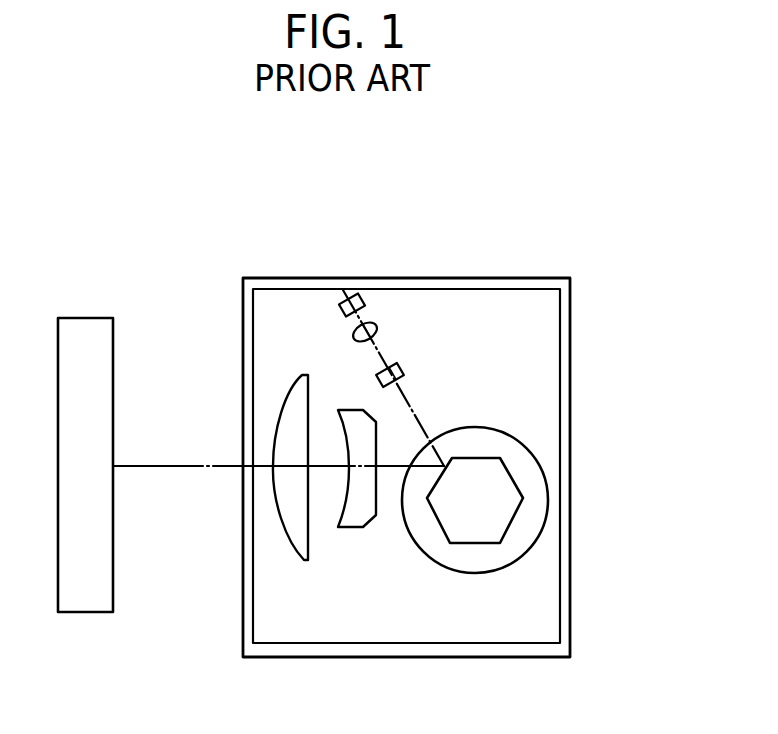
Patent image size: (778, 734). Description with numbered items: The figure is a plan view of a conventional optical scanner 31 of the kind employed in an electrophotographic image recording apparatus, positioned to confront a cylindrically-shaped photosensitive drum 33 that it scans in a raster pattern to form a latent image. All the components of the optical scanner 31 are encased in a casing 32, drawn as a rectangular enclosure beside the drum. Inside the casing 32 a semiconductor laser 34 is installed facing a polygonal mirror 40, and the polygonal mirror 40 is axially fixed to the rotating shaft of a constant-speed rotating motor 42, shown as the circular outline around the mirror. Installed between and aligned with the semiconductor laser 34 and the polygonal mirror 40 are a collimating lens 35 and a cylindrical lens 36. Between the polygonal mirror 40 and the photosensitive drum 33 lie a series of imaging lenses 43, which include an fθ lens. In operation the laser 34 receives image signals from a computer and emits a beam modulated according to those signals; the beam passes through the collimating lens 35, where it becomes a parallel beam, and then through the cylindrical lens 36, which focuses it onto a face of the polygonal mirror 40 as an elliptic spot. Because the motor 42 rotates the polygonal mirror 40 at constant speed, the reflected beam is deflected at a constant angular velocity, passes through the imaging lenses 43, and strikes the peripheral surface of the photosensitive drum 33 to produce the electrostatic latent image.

The optical scanner 31 is at (582, 193).
The casing 32 is at (263, 650).
The photosensitive drum 33 is at (83, 613).
The semiconductor laser 34 is at (350, 297).
The collimating lens 35 is at (368, 322).
The cylindrical lens 36 is at (397, 366).
The polygonal mirror 40 is at (488, 490).
The constant-speed rotating motor 42 is at (543, 528).
The imaging lenses 43 is at (298, 533).